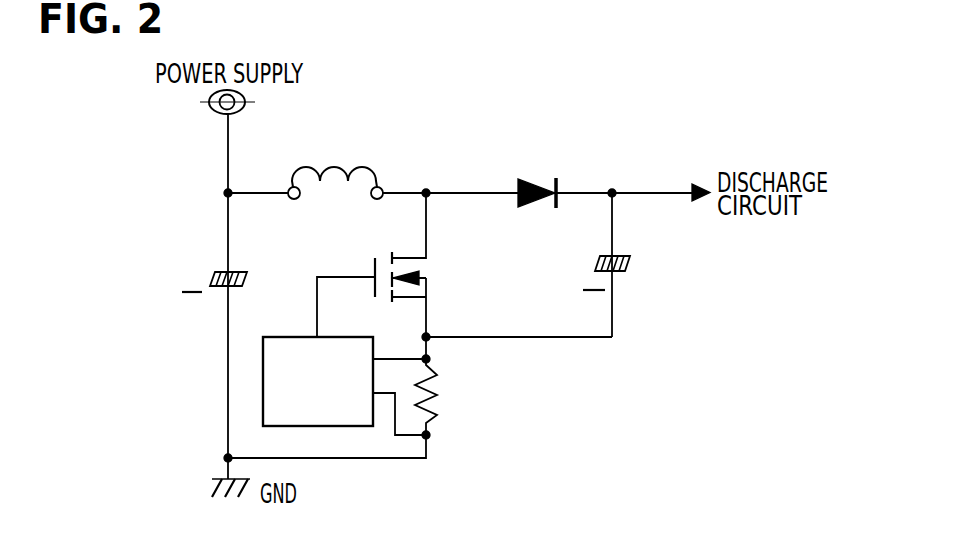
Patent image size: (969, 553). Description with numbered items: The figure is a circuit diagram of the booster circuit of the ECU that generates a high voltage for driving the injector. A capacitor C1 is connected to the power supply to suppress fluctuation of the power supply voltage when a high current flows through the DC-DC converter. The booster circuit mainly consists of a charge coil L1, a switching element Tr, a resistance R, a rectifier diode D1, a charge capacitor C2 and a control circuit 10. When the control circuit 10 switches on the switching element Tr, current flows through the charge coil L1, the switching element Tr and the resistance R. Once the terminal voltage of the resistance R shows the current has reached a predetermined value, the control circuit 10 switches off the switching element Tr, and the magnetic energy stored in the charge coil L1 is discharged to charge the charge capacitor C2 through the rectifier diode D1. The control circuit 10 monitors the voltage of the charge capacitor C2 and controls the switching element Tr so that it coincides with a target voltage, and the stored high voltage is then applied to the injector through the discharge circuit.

The control circuit 10 is at (287, 337).
The charge coil L1 is at (327, 161).
The rectifier diode D1 is at (537, 174).
The capacitor C1 is at (214, 266).
The charge capacitor C2 is at (625, 265).
The switching element Tr is at (390, 276).
The resistance R is at (440, 397).